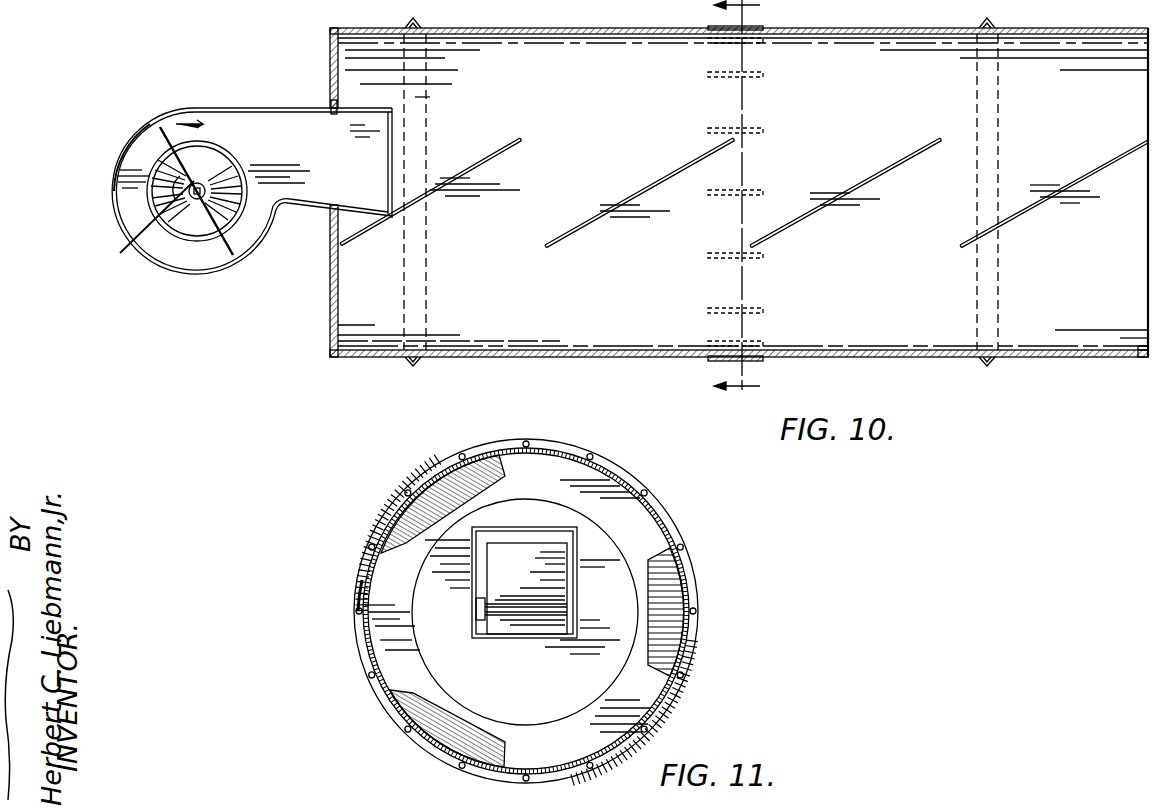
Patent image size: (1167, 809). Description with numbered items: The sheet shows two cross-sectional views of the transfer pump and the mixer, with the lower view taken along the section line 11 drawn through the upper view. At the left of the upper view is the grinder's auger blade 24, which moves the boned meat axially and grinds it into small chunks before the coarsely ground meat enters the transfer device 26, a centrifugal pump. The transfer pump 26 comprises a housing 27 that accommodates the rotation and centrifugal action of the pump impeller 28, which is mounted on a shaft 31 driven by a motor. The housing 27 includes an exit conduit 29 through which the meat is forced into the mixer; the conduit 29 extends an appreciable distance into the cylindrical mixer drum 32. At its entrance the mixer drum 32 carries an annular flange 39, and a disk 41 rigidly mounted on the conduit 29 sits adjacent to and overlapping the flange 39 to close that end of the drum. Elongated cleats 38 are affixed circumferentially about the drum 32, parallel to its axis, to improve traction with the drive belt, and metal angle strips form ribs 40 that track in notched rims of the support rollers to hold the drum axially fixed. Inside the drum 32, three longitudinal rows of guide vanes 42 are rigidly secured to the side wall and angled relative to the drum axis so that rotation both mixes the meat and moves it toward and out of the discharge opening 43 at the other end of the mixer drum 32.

In FIG. 10, the section line 11— 11 is at (749, 202).
In FIG. 10, the auger blade 24 is at (216, 160).
In FIG. 10, the transfer device 26 is at (213, 275).
In FIG. 10, the housing 27 is at (114, 204).
In FIG. 10, the pump impeller 28 is at (163, 133).
In FIG. 11, the pump impeller 28 is at (562, 598).
In FIG. 10, the exit conduit 29 is at (305, 211).
In FIG. 11, the exit conduit 29 is at (480, 565).
In FIG. 10, the shaft 31 is at (139, 224).
In FIG. 10, the mixer drum 32 is at (1080, 357).
In FIG. 11, the mixer drum 32 is at (358, 592).
In FIG. 10, the cleats 38 is at (714, 360).
In FIG. 11, the cleats 38 is at (694, 615).
In FIG. 10, the annular flange 39 is at (330, 350).
In FIG. 11, the annular flange 39 is at (612, 486).
In FIG. 10, the ribs 40 is at (413, 366).
In FIG. 11, the ribs 40 is at (684, 532).
In FIG. 10, the disk 41 is at (330, 292).
In FIG. 11, the disk 41 is at (540, 506).
In FIG. 10, the guide vanes 42 is at (522, 150).
In FIG. 11, the guide vanes 42 is at (493, 464).
In FIG. 10, the discharge opening 43 is at (1148, 357).